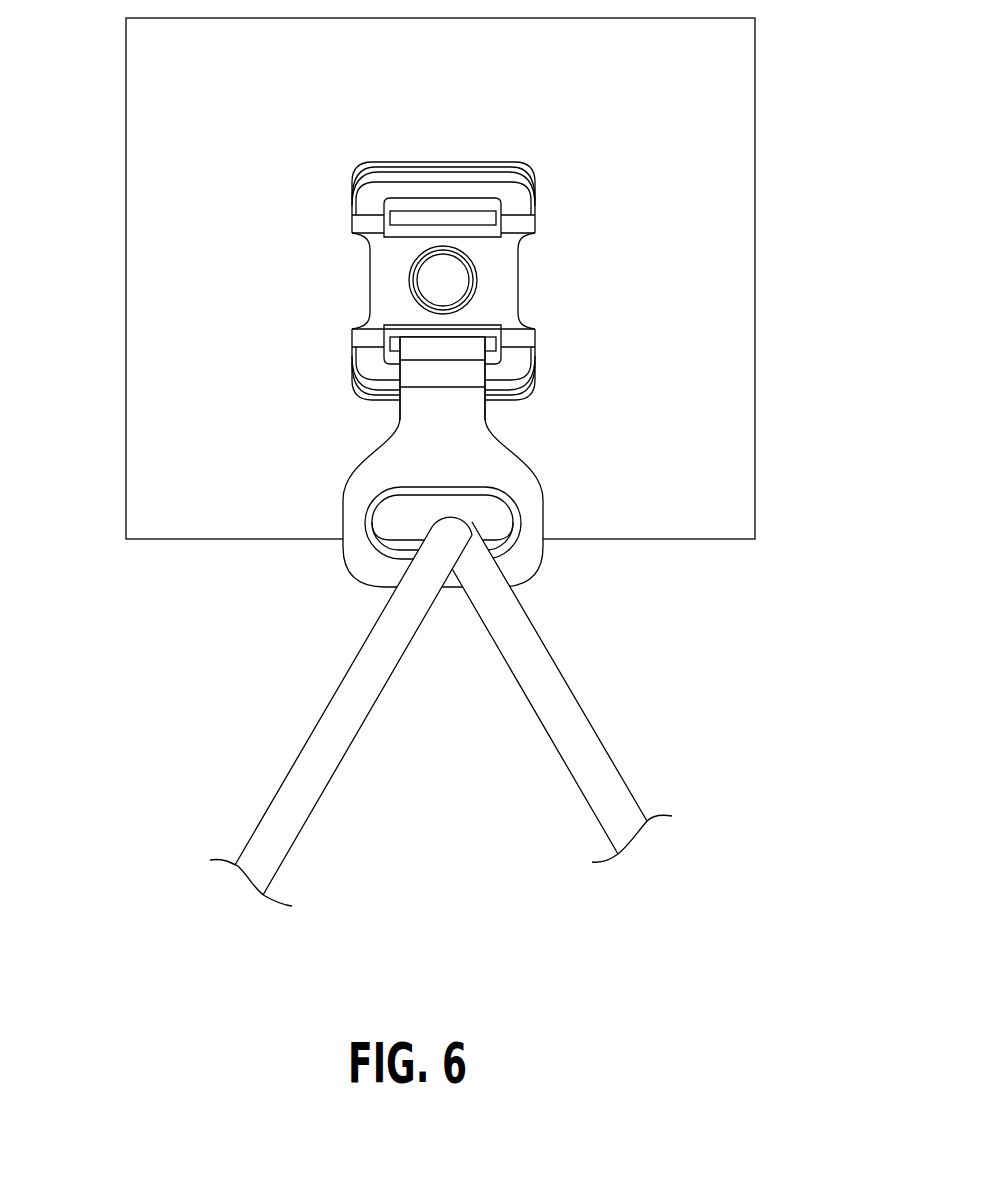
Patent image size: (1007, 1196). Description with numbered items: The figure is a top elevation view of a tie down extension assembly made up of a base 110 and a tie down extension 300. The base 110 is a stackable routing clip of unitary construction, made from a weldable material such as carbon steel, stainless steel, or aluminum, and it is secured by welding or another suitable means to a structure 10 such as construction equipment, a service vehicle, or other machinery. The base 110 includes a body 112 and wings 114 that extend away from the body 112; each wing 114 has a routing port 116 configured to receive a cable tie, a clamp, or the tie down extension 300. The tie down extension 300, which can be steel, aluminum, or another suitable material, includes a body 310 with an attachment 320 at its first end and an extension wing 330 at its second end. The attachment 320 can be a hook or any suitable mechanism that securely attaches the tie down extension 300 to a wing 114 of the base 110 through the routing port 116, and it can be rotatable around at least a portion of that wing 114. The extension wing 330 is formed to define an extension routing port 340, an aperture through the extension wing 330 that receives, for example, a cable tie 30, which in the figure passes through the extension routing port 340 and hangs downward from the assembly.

The structure 10 is at (152, 108).
The cable tie 30 is at (288, 796).
The base 110 is at (431, 254).
The body 112 is at (378, 258).
The wings 114 is at (500, 178).
The routing port 116 is at (510, 213).
The tie down extension 300 is at (442, 470).
The body 310 is at (465, 438).
The attachment 320 is at (443, 372).
The extension wing 330 is at (355, 517).
The extension routing port 340 is at (492, 517).